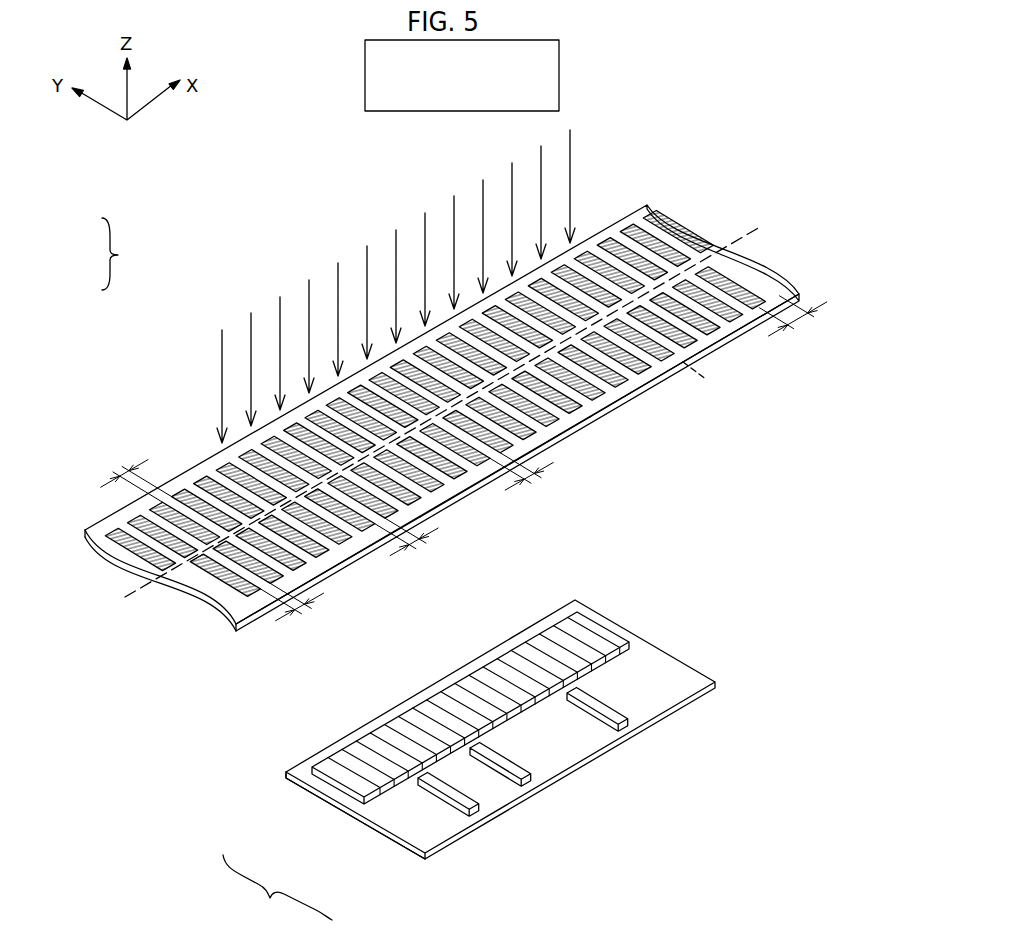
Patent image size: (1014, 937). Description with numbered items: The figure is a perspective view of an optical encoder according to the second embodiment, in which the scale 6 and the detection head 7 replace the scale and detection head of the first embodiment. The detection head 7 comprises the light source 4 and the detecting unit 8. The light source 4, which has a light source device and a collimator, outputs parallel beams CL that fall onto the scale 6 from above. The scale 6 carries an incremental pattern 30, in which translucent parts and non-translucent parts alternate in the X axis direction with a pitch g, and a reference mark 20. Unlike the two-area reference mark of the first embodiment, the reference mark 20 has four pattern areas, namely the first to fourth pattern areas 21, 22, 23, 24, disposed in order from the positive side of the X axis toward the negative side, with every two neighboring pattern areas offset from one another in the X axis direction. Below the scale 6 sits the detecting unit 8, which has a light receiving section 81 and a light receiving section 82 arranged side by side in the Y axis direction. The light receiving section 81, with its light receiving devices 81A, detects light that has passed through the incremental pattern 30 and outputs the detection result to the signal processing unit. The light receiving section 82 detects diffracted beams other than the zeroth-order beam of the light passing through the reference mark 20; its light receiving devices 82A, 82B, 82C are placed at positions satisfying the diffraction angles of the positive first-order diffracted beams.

The light source 4 is at (559, 62).
The scale 6 is at (427, 414).
The detection head 7 is at (110, 254).
The detecting unit 8 is at (469, 765).
The reference mark 20 is at (188, 605).
The first pattern area 21 is at (741, 356).
The second pattern area 22 is at (632, 419).
The third pattern area 23 is at (466, 516).
The fourth pattern area 24 is at (353, 585).
The incremental pattern 30 is at (102, 568).
The light receiving section 81 is at (432, 737).
The light receiving devices 81A is at (335, 760).
The light receiving section 82 is at (500, 752).
The light receiving device 82A is at (633, 727).
The light receiving device 82B is at (535, 780).
The light receiving device 82C is at (482, 807).
The parallel beams CL is at (621, 149).